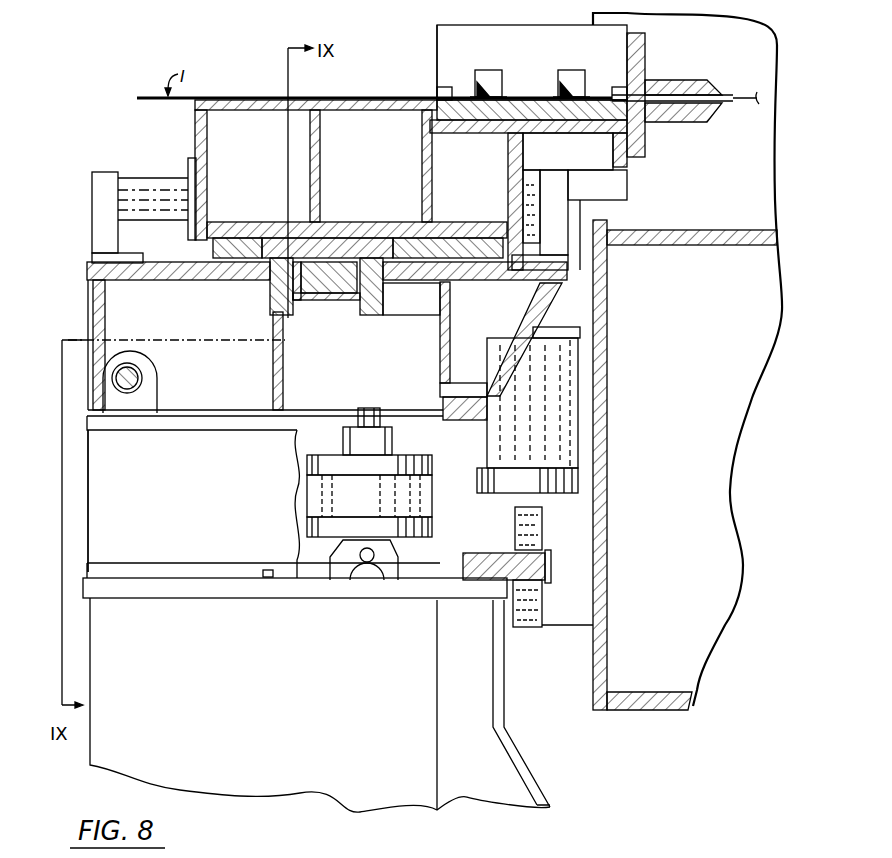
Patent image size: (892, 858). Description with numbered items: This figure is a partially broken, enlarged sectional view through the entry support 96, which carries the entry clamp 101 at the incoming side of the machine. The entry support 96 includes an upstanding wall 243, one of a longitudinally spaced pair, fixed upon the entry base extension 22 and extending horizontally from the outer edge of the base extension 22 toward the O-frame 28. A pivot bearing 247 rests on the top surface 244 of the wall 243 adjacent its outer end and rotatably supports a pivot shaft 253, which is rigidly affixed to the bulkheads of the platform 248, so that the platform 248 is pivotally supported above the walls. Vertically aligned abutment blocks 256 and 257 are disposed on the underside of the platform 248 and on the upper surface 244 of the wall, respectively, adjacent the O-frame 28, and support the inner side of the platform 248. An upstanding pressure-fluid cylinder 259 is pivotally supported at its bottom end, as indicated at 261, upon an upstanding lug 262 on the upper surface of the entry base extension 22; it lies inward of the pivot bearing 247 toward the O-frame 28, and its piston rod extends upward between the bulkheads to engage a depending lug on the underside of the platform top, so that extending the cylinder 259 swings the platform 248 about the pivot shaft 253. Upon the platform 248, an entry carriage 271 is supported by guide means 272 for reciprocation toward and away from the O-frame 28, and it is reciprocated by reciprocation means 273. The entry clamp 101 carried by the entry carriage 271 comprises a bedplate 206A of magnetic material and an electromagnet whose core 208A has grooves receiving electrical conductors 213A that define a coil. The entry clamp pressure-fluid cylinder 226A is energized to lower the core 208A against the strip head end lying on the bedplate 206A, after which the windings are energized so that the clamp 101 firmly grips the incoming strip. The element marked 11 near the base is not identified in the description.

The magnet core 208A is at (449, 34).
The entry clamp 101 is at (429, 60).
The electrical conductors 213A is at (483, 92).
The bedplate 206A is at (441, 128).
The entry carriage 271 is at (359, 185).
The reciprocation means 273 is at (298, 221).
The guide means 272 is at (161, 169).
The platform 248 is at (269, 345).
The pivot shaft 253 is at (140, 370).
The pivot bearing 247 is at (143, 397).
The top surface 244 is at (176, 413).
The wall 243 is at (193, 504).
The entry support 96 is at (89, 543).
The pressure-fluid cylinder 259 is at (332, 528).
The upstanding lug 262 is at (382, 572).
The pivotal support 261 is at (338, 585).
The entry base extension 22 is at (316, 695).
The frame 11 is at (478, 788).
The abutment block 256 is at (444, 405).
The abutment block 257 is at (490, 412).
The entry clamp pressure-fluid cylinder 226A is at (528, 410).
The O-frame 28 is at (746, 398).